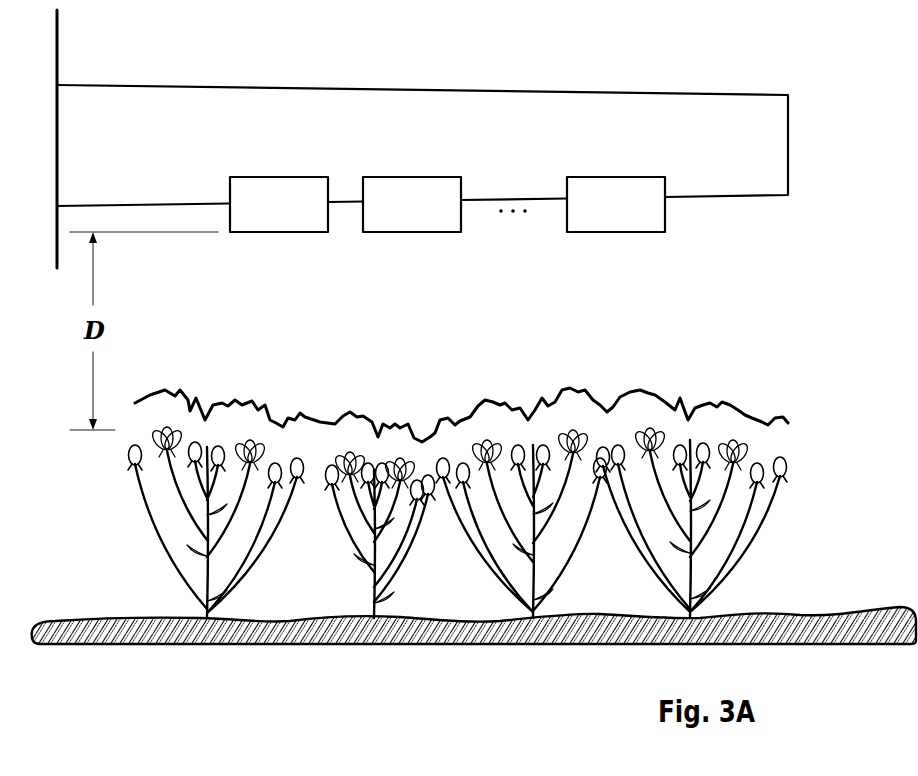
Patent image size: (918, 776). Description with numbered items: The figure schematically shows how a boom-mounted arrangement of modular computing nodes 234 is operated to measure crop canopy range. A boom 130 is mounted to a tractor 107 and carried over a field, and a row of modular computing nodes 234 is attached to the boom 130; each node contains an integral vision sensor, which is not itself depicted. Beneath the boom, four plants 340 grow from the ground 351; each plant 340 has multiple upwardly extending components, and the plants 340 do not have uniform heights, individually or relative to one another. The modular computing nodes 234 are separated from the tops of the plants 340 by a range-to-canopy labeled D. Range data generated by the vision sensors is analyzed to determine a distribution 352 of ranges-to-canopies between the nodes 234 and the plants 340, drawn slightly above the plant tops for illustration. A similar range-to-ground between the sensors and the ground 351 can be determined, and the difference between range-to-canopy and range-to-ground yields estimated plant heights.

The tractor 107 is at (94, 39).
The boom 130 is at (788, 128).
The modular computing node 234 is at (293, 216).
The plant 340 is at (624, 573).
The ground 351 is at (816, 614).
The distribution of ranges-to-canopies 352 is at (787, 423).